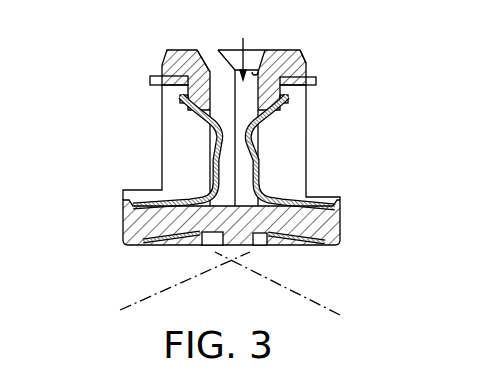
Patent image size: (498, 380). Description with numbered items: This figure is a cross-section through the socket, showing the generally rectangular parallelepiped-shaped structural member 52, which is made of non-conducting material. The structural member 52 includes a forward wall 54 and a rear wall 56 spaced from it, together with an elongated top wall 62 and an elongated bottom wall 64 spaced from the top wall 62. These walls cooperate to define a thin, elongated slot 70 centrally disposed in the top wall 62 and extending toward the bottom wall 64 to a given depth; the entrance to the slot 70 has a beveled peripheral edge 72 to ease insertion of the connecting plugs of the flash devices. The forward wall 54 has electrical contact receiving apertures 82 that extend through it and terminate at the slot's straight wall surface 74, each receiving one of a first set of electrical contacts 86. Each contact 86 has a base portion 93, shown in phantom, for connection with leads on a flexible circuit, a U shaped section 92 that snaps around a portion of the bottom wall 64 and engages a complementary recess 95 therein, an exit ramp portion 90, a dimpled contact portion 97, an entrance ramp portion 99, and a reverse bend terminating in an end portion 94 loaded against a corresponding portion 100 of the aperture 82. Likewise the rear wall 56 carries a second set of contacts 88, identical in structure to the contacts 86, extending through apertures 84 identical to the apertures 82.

The structural member 52 is at (301, 56).
The forward wall 54 is at (306, 148).
The rear wall 56 is at (162, 118).
The top wall 62 is at (284, 50).
The bottom wall 64 is at (290, 244).
The slot 70 is at (238, 113).
The beveled peripheral edge 72 is at (205, 45).
The straight wall surface 74 is at (272, 52).
The electrical contact receiving aperture 82 is at (302, 123).
The aperture 84 is at (170, 136).
The electrical contact 86 is at (261, 181).
The contact 88 is at (211, 178).
The exit ramp portion 90 is at (214, 158).
The U shaped section 92 is at (123, 225).
The base portion 93 is at (201, 276).
The end portion 94 is at (180, 97).
The recess 95 is at (197, 236).
The dimpled contact portion 97 is at (216, 133).
The entrance ramp portion 99 is at (227, 132).
The portion of aperture 100 is at (162, 83).